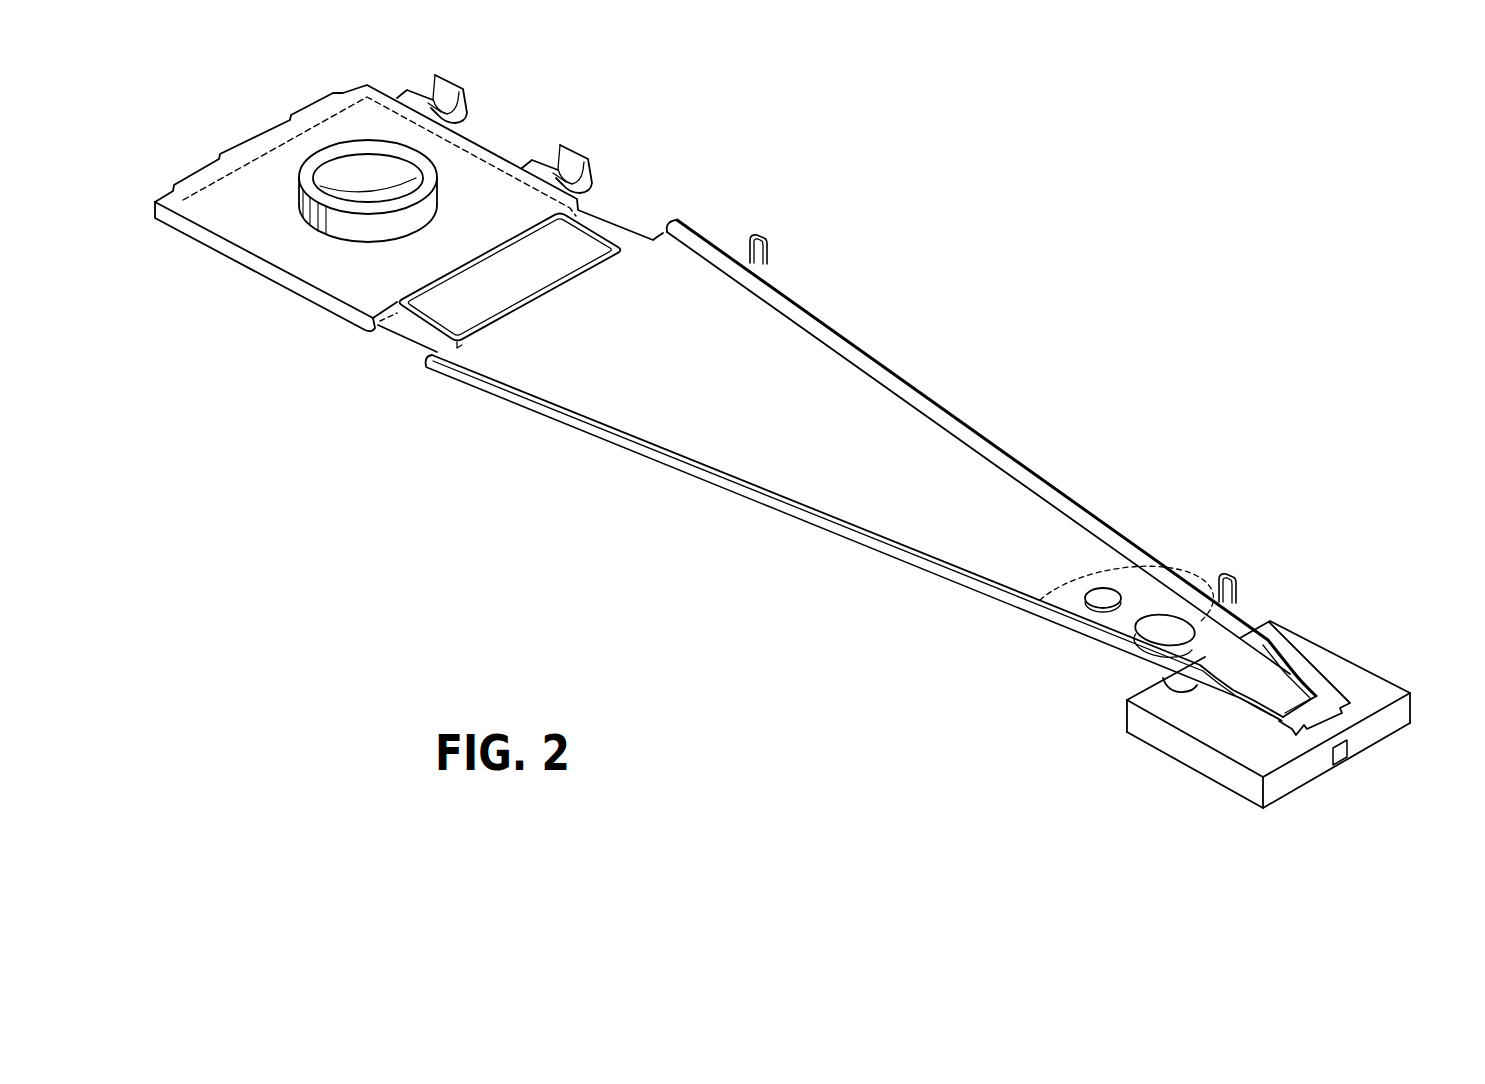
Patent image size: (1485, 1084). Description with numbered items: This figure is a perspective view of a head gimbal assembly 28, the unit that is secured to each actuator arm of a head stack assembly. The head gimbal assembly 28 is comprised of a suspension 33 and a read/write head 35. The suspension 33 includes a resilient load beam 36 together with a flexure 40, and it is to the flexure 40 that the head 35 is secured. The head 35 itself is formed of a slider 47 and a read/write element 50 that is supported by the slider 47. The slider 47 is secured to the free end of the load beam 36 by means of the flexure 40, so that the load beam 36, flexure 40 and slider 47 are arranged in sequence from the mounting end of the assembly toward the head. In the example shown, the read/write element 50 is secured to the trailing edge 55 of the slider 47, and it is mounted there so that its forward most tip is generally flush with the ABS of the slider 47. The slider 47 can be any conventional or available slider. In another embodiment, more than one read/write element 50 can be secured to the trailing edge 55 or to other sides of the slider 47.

The head gimbal assembly 28 is at (907, 218).
The suspension 33 is at (1107, 500).
The load beam 36 is at (890, 437).
The read/write head 35 is at (1298, 616).
The slider 47 is at (1336, 650).
The trailing edge 55 is at (1412, 723).
The read/write element 50 is at (1340, 762).
The flexure 40 is at (1163, 680).
The air bearing surface ABS is at (1293, 793).